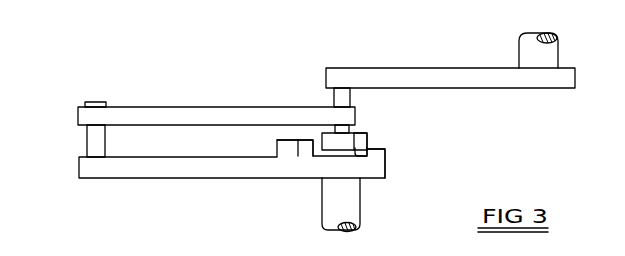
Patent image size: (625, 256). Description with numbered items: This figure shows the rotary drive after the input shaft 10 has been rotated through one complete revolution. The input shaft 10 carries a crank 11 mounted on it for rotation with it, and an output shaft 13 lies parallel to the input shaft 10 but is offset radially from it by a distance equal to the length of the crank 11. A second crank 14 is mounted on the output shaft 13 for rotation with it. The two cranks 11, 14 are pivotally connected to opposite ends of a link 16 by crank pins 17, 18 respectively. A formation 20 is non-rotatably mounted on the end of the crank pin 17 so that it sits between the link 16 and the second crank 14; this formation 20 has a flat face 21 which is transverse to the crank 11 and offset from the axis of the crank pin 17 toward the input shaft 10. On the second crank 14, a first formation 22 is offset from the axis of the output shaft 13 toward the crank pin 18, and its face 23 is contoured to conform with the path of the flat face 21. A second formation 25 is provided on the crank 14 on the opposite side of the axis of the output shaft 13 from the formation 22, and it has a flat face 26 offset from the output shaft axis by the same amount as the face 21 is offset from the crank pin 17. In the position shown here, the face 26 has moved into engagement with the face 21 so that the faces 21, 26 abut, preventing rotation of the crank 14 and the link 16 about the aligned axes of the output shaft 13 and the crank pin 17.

The input shaft 10 is at (532, 53).
The crank 11 is at (417, 72).
The output shaft 13 is at (347, 200).
The second crank 14 is at (157, 170).
The link 16 is at (212, 115).
The crank pin 17 is at (337, 100).
The crank pin 18 is at (90, 143).
The formation 20 is at (367, 137).
The flat face 21 is at (365, 135).
The first formation 22 is at (284, 148).
The contoured face 23 is at (303, 148).
The second formation 25 is at (378, 147).
The flat face 26 is at (356, 152).